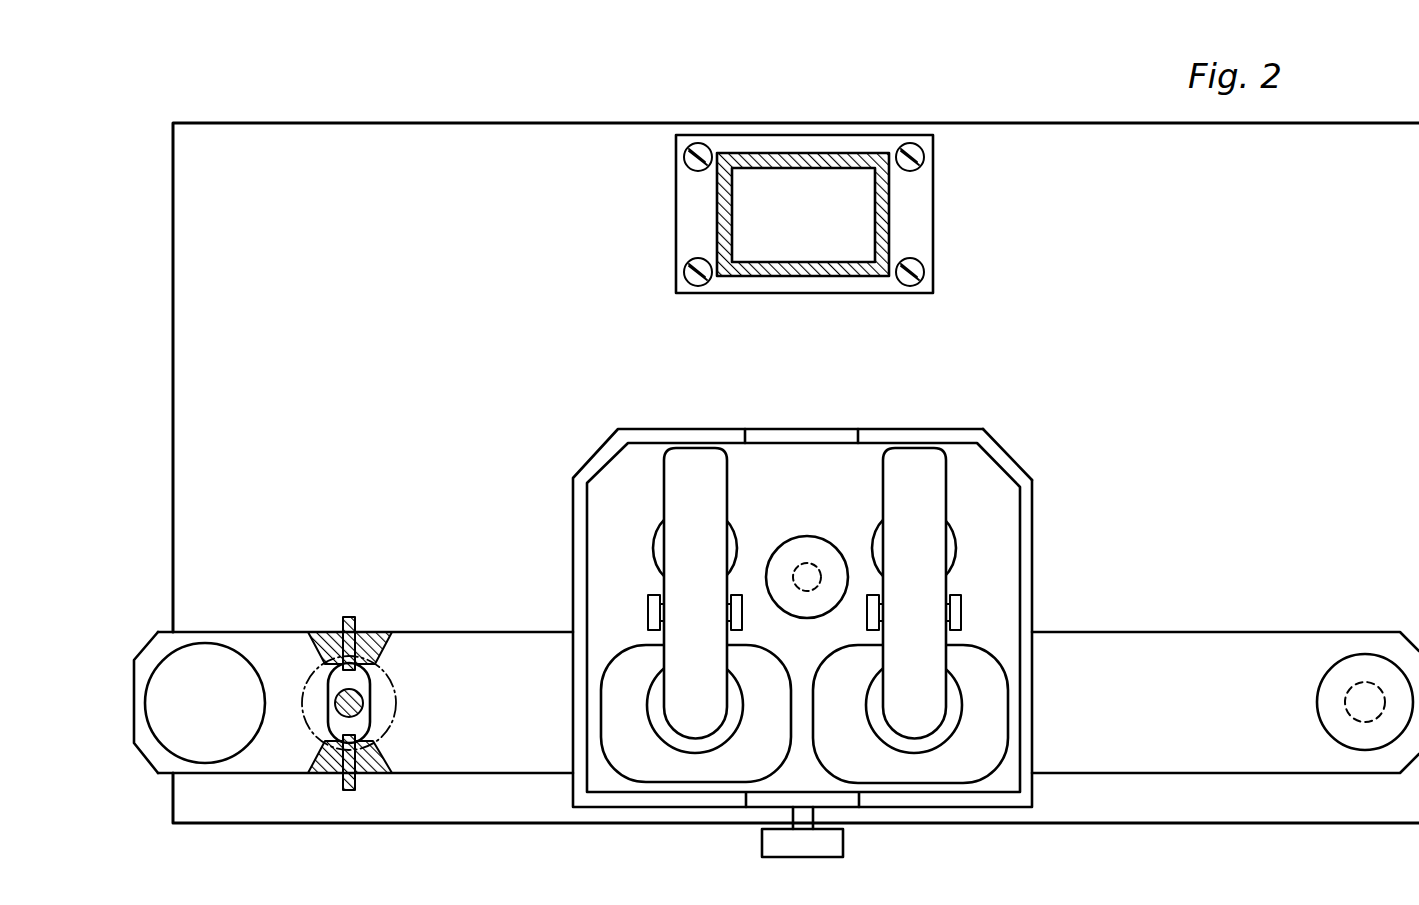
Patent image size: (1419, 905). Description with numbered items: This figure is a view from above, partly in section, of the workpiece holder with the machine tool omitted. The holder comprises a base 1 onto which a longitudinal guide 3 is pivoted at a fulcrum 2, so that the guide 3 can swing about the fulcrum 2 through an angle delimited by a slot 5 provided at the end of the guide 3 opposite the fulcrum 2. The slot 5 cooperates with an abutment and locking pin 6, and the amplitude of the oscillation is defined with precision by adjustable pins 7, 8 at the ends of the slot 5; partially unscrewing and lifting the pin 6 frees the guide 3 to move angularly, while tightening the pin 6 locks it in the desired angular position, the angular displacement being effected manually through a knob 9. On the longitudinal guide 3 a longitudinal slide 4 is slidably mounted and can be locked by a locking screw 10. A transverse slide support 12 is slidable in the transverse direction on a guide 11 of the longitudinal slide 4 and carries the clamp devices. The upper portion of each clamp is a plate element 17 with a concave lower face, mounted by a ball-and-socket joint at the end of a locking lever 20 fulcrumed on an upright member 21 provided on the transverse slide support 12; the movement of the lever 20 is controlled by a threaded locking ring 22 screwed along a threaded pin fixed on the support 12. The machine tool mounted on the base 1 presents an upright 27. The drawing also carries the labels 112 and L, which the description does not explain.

The base 1 is at (1073, 136).
The fulcrum 2 is at (1366, 686).
The longitudinal guide 3 is at (1181, 636).
The longitudinal slide 4 is at (1032, 520).
The slot 5 is at (372, 688).
The abutment and locking pin 6 is at (365, 703).
The adjustable pin 7 is at (358, 783).
The adjustable pin 8 is at (358, 626).
The knob 9 is at (210, 656).
The locking screw 10 is at (843, 843).
The guide 11 is at (851, 430).
The transverse slide support 12 is at (993, 474).
The plate element 17 is at (655, 690).
The locking lever 20 is at (676, 482).
The upright member 21 is at (650, 606).
The threaded locking ring 22 is at (736, 526).
The upright 27 is at (889, 213).
The central pivot 112 is at (816, 548).
The pocket L is at (770, 748).